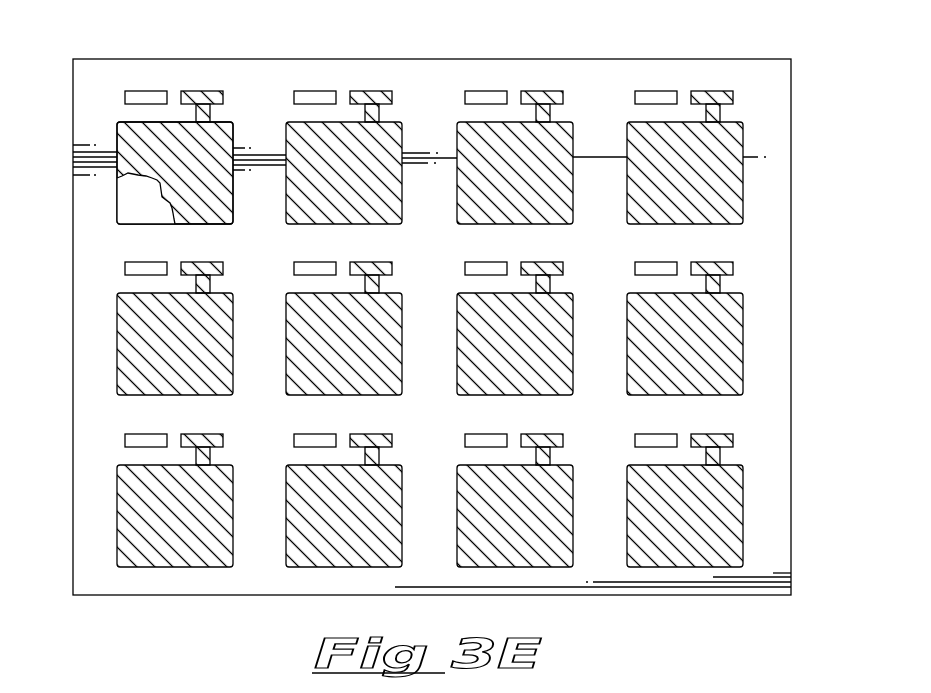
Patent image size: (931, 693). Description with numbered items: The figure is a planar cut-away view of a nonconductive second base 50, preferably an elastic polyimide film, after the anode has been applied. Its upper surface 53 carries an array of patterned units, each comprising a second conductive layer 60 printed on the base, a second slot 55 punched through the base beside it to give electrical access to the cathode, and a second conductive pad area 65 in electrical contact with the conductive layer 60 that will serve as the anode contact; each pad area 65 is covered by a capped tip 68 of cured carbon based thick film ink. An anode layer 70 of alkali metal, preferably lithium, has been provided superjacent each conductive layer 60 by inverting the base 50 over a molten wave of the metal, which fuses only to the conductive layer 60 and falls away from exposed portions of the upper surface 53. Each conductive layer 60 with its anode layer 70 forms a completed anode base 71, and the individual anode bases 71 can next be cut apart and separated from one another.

The second base 50 is at (790, 262).
The upper surface 53 is at (762, 415).
The second slots 55 is at (125, 98).
The second conductive layer 60 is at (135, 203).
The second conductive pad area 65 is at (193, 70).
The capped tip 68 is at (201, 92).
The anode layer 70 is at (181, 190).
The anode base 71 is at (105, 193).